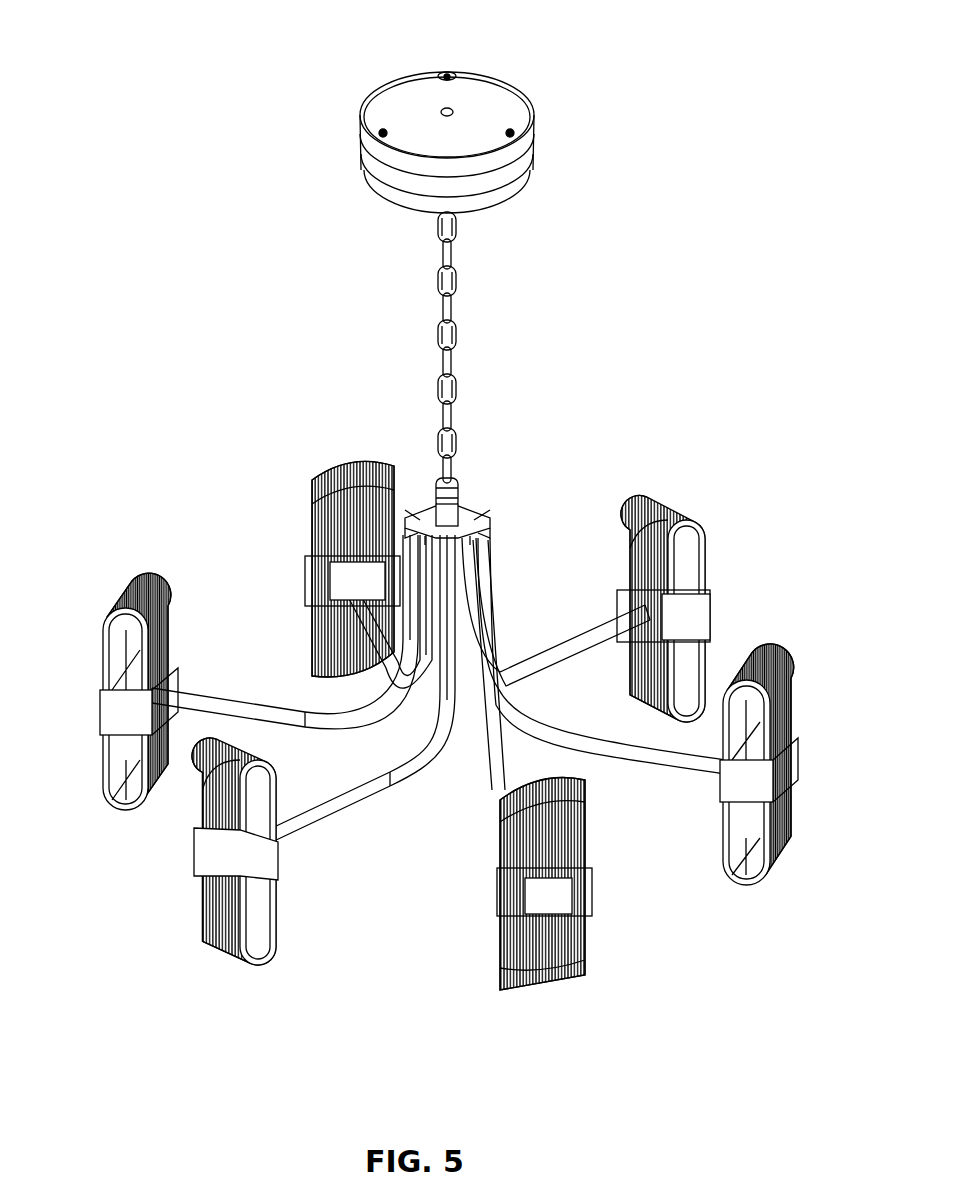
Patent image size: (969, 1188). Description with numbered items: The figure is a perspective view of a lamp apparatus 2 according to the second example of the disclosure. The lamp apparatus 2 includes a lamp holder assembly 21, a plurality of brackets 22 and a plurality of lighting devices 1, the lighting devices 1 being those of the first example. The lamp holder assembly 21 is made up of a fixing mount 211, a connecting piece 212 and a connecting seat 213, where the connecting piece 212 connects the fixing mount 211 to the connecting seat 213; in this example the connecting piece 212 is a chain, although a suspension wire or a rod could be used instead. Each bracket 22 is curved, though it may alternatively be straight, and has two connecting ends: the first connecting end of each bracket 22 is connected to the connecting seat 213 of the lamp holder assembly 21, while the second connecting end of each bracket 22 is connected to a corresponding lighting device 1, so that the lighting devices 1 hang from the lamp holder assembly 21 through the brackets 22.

The lighting device 1 is at (298, 470).
The lamp apparatus 2 is at (258, 111).
The lamp holder assembly 21 is at (561, 283).
The fixing mount 211 is at (490, 97).
The connecting piece 212 is at (437, 345).
The connecting seat 213 is at (455, 520).
The bracket 22 is at (331, 830).